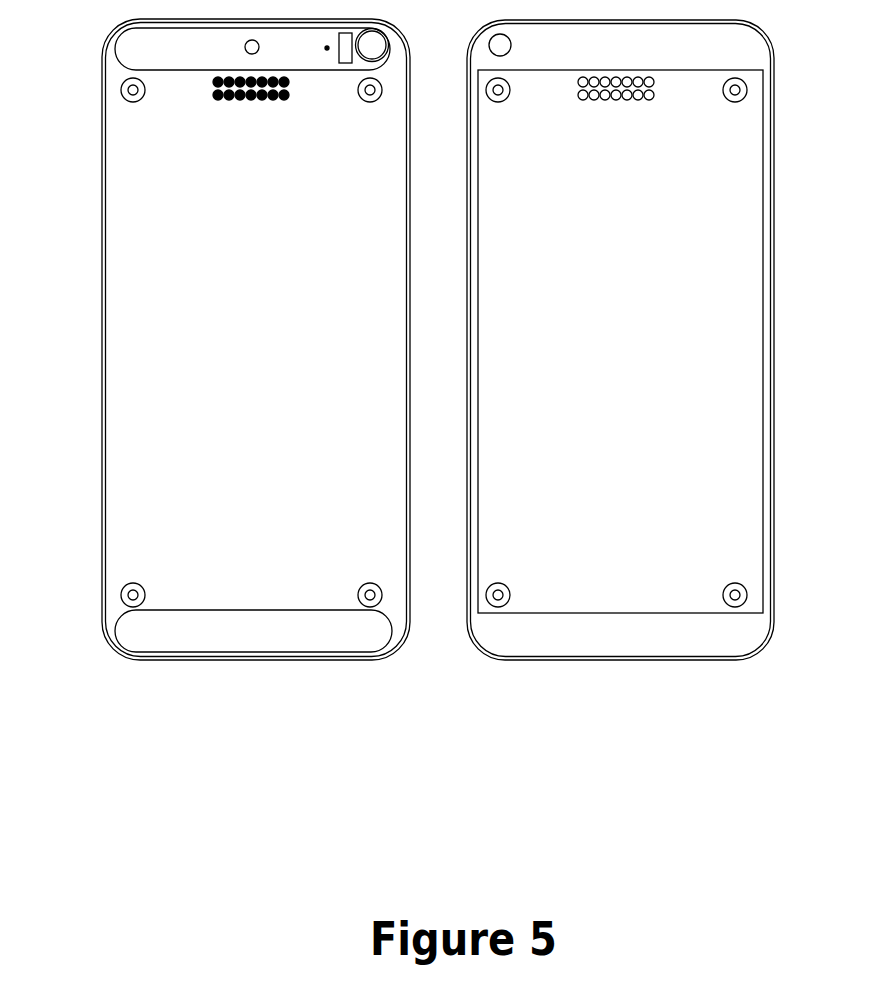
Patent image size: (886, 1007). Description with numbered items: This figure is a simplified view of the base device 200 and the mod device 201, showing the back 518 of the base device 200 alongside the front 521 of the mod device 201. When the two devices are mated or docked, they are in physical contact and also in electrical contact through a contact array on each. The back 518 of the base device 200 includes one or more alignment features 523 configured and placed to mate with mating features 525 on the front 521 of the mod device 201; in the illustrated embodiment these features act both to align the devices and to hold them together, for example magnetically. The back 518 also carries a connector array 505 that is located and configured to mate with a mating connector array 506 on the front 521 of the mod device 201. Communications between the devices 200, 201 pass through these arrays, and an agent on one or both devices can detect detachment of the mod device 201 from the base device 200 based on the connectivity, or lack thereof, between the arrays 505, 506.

The base device 200 is at (215, 386).
The mod device 201 is at (661, 382).
The connector array 505 is at (273, 97).
The mating connector array 506 is at (640, 97).
The back of the base device 518 is at (117, 420).
The front of the mod device 521 is at (745, 452).
The alignment features 523 is at (131, 91).
The mating features 525 is at (736, 90).